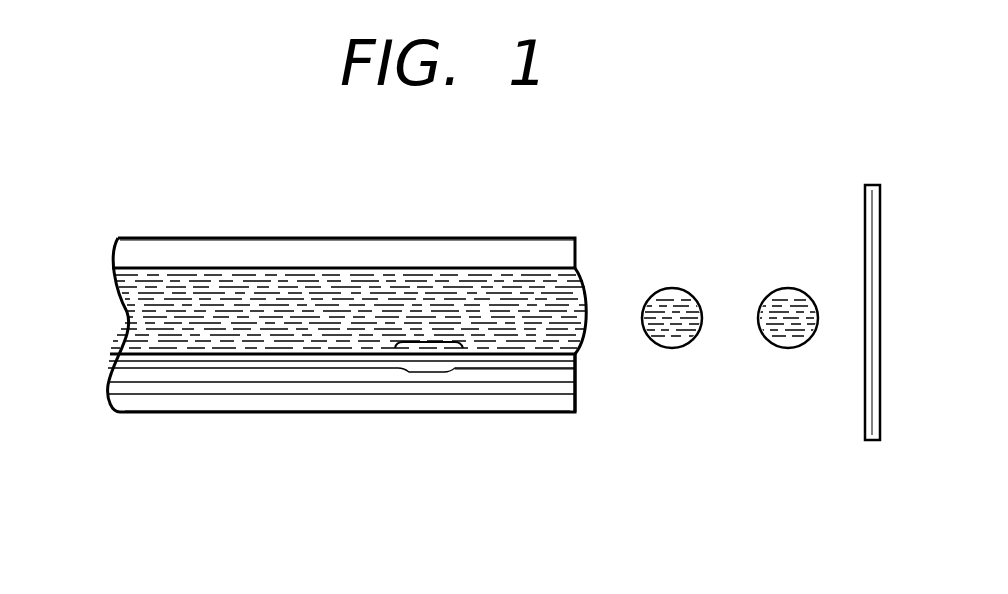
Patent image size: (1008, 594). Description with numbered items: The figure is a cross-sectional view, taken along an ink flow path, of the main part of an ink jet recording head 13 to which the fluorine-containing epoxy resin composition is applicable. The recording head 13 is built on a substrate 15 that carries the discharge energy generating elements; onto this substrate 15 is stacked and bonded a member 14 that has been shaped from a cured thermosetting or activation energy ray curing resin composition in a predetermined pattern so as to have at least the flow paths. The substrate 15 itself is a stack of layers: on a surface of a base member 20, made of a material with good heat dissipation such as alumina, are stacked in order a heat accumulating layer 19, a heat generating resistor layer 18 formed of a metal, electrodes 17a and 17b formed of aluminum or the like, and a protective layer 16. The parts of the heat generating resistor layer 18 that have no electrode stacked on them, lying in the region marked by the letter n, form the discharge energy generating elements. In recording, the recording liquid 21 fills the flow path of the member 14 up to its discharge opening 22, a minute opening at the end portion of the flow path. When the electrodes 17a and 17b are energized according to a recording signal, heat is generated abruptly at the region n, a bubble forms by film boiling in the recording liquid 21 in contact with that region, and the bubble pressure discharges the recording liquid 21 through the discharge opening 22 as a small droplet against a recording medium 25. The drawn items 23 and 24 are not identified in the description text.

The recording head 13 is at (210, 216).
The member 14 is at (268, 250).
The recording liquid 21 is at (158, 275).
The heat generating region n is at (435, 341).
The right end portion 23 is at (589, 290).
The discharge opening 22 is at (595, 345).
The spacer dots 24 is at (818, 278).
The recording medium 25 is at (865, 226).
The substrate 15 is at (100, 352).
The protective layer 16 is at (152, 360).
The electrode 17a is at (208, 372).
The heat generating resistor layer 18 is at (260, 380).
The heat accumulating layer 19 is at (322, 392).
The base member 20 is at (395, 405).
The electrode 17b is at (530, 372).